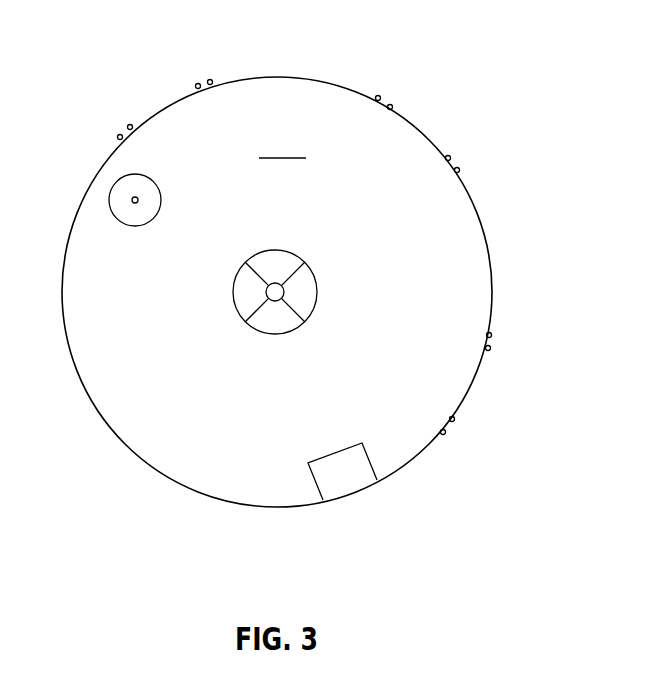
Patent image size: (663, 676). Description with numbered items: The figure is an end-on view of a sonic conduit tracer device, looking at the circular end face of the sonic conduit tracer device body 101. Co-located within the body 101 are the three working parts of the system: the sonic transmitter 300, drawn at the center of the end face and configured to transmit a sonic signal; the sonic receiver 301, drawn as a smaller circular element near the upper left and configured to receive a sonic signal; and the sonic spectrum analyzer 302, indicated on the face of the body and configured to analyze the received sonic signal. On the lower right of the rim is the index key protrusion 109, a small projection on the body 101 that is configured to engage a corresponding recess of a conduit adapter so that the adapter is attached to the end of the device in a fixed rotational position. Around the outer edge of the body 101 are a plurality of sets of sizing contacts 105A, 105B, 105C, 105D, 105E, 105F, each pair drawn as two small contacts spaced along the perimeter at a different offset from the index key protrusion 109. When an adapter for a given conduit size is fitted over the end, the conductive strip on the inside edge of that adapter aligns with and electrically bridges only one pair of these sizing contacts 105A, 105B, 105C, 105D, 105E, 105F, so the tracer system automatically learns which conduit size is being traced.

The sonic conduit tracer device body 101 is at (188, 490).
The index key protrusion 109 is at (352, 497).
The sizing contact 105A is at (129, 127).
The sizing contact 105B is at (210, 82).
The sizing contact 105C is at (378, 98).
The sizing contact 105D is at (448, 158).
The sizing contact 105E is at (489, 348).
The sizing contact 105F is at (452, 420).
The sonic transmitter 300 is at (317, 290).
The sonic receiver 301 is at (119, 178).
The sonic spectrum analyzer 302 is at (282, 144).